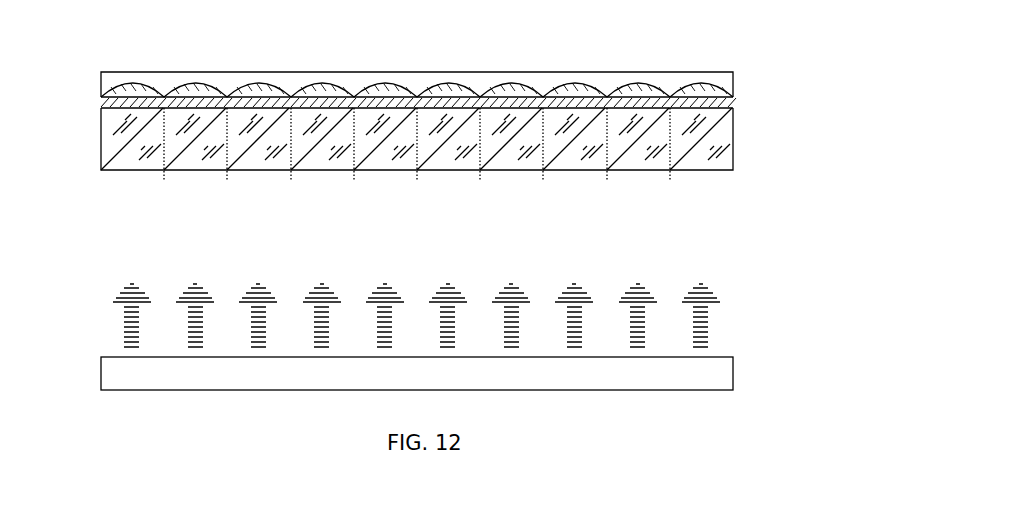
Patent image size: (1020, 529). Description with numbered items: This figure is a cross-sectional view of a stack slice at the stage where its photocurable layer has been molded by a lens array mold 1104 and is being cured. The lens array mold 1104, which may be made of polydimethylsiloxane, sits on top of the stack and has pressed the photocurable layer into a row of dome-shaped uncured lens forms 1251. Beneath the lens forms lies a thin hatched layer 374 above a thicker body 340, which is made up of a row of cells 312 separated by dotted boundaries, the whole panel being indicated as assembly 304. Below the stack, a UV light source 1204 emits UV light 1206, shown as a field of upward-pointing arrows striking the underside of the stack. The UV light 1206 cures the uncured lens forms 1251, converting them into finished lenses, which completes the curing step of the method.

The uncured lens forms 1251 is at (483, 65).
The lens array mold 1104 is at (733, 93).
The adhesive layer 374 is at (733, 101).
The backsheet 340 is at (740, 134).
The solar cell assembly 304 is at (123, 150).
The solar cells 312 is at (437, 202).
The UV light 1206 is at (732, 273).
The UV light source 1204 is at (417, 373).